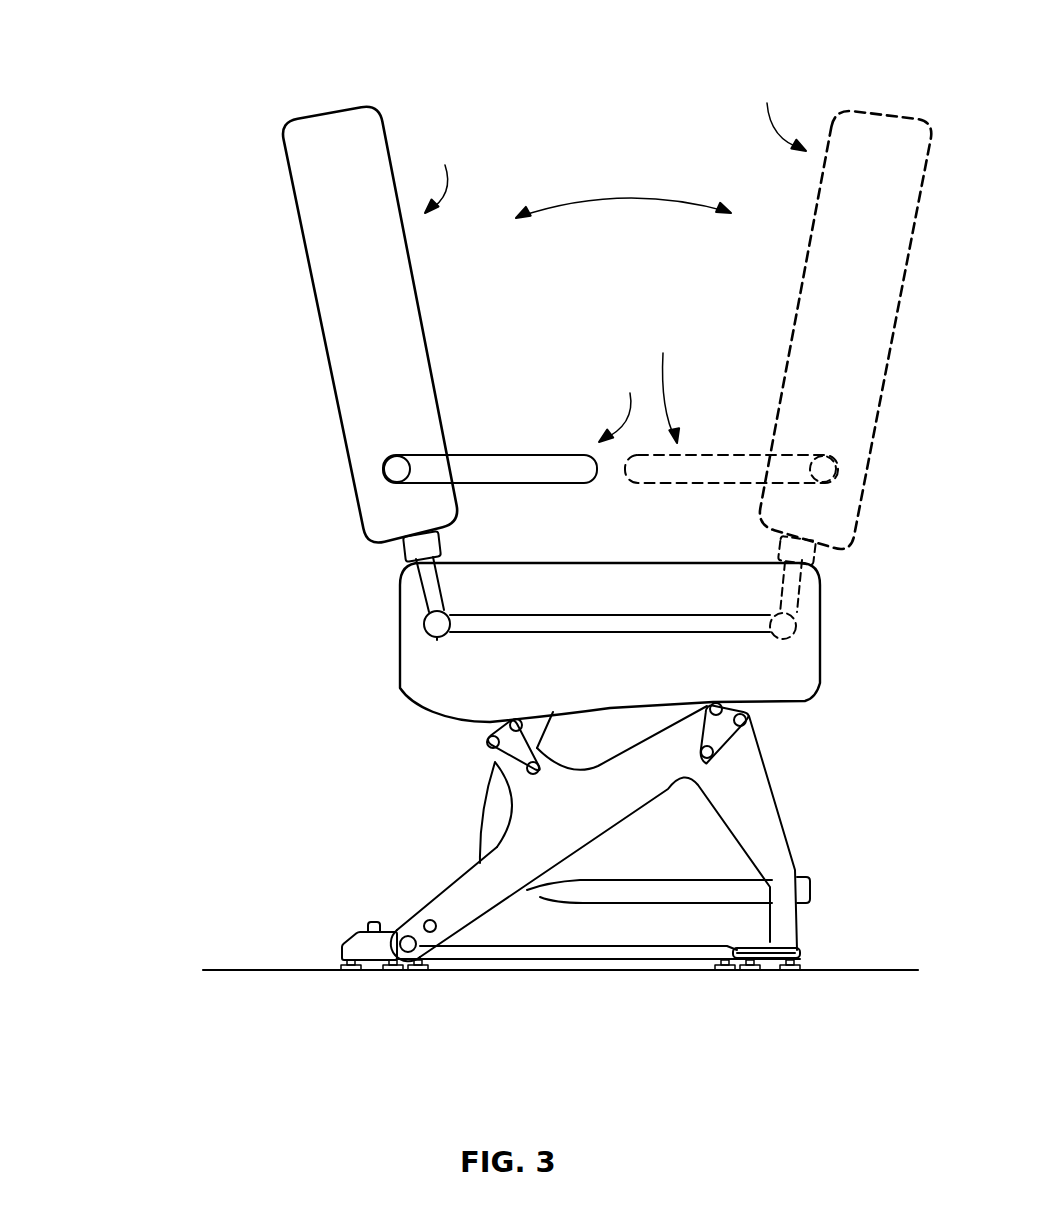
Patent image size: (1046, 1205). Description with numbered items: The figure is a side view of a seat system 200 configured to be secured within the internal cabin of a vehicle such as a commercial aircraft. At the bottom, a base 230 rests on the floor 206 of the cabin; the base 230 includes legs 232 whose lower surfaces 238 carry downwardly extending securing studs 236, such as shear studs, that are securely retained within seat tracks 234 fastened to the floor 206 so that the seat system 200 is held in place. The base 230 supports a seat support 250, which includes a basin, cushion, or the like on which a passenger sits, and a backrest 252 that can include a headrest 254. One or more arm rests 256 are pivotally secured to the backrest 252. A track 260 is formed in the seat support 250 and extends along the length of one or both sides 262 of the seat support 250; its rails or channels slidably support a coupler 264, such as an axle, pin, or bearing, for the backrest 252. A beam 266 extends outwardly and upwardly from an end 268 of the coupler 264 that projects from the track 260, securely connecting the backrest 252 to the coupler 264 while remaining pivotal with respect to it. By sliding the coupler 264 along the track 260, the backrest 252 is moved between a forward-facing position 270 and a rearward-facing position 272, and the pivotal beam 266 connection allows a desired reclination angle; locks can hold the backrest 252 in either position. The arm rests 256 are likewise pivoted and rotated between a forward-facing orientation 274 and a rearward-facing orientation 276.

The seat system 200 is at (158, 160).
The floor 206 is at (218, 968).
The base 230 is at (480, 856).
The legs 232 is at (342, 948).
The seat tracks 234 is at (850, 972).
The securing studs 236 is at (345, 975).
The lower surfaces 238 is at (362, 932).
The seat support 250 is at (660, 619).
The backrest 252 is at (343, 316).
The headrest 254 is at (384, 145).
The arm rests 256 is at (540, 462).
The track 260 is at (577, 615).
The sides 262 is at (735, 657).
The coupler 264 is at (424, 622).
The beam 266 is at (442, 600).
The end 268 is at (437, 638).
The forward-facing position 270 is at (454, 173).
The rearward-facing position 272 is at (834, 353).
The armrest forward arrow 274 is at (627, 401).
The rearward-facing orientation 276 is at (663, 383).